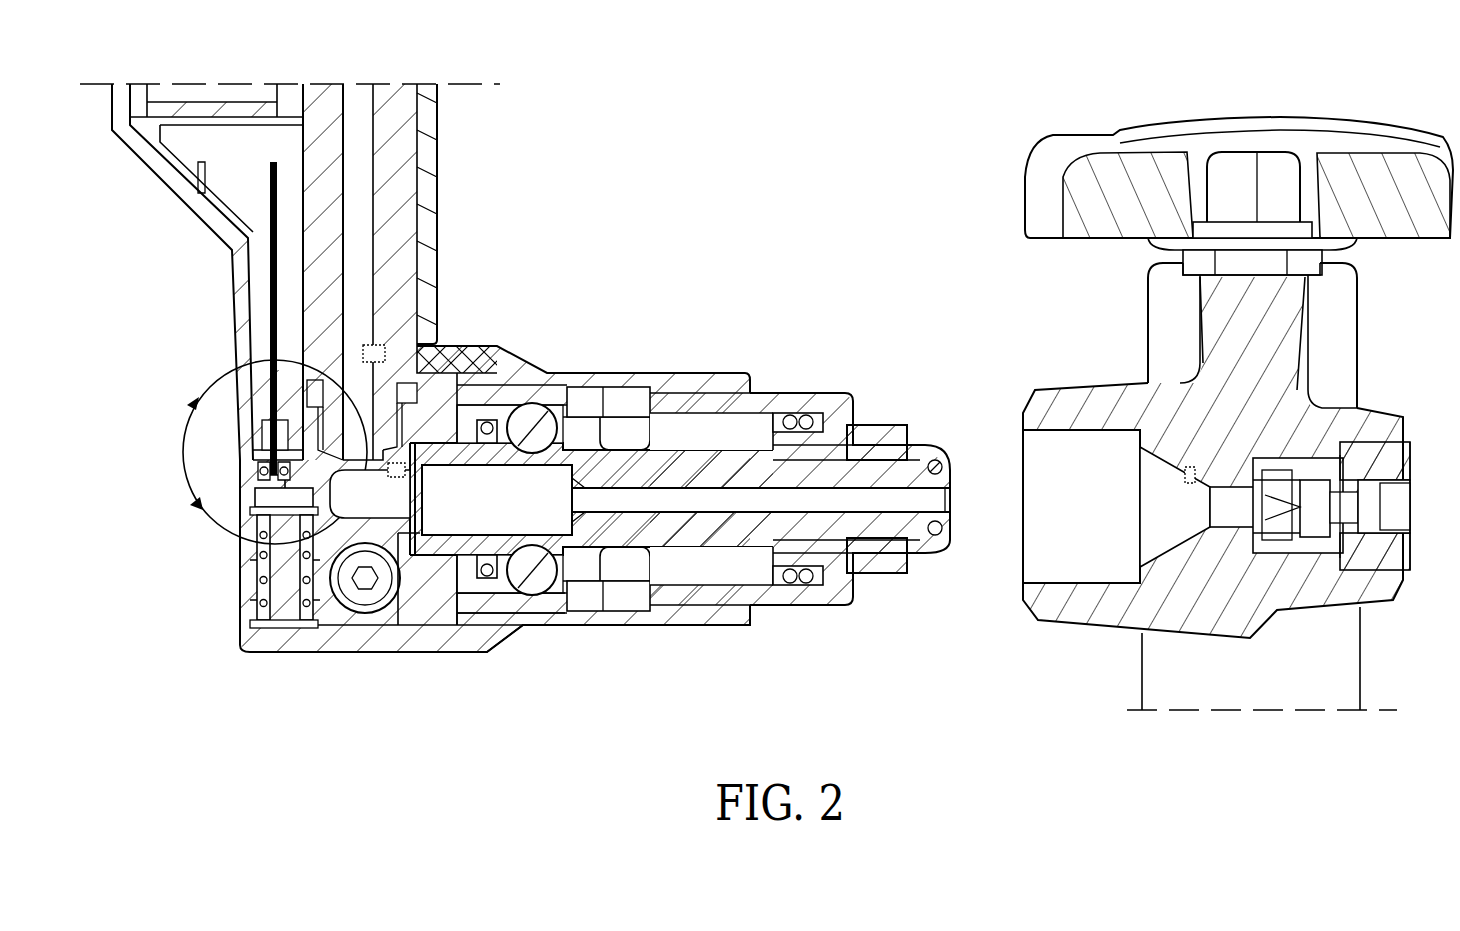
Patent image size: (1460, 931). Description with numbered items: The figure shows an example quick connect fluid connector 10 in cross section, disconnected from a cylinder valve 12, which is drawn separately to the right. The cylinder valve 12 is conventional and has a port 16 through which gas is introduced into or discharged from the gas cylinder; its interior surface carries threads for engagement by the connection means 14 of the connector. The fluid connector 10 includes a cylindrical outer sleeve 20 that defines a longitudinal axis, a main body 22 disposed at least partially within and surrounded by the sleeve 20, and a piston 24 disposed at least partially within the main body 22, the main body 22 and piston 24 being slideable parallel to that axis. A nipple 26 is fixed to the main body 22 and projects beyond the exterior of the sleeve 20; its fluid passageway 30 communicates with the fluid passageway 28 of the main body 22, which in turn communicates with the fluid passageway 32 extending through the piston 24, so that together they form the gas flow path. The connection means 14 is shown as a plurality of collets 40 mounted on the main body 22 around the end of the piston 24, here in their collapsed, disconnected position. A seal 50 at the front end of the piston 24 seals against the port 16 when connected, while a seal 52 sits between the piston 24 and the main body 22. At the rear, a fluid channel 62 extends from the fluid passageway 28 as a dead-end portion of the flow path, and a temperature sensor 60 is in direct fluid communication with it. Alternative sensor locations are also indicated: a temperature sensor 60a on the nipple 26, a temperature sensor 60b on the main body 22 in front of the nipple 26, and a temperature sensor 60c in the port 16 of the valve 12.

The quick connect fluid connector 10 is at (530, 400).
The cylinder valve 12 is at (1228, 384).
The connection means 14 is at (880, 404).
The port 16 is at (1062, 610).
The cylindrical outer sleeve 20 is at (470, 642).
The main body 22 is at (425, 590).
The piston 24 is at (625, 465).
The nipple 26 is at (387, 307).
The fluid passageway 28 is at (323, 603).
The fluid passageway 30 is at (362, 255).
The fluid passageway 32 is at (682, 500).
The collets 40 is at (892, 436).
The seal 50 is at (940, 537).
The seal 52 is at (485, 420).
The temperature sensor 60 is at (244, 467).
The temperature sensor 60a is at (385, 352).
The temperature sensor 60b is at (405, 470).
The temperature sensor 60c is at (1190, 484).
The fluid channel 62 is at (285, 497).